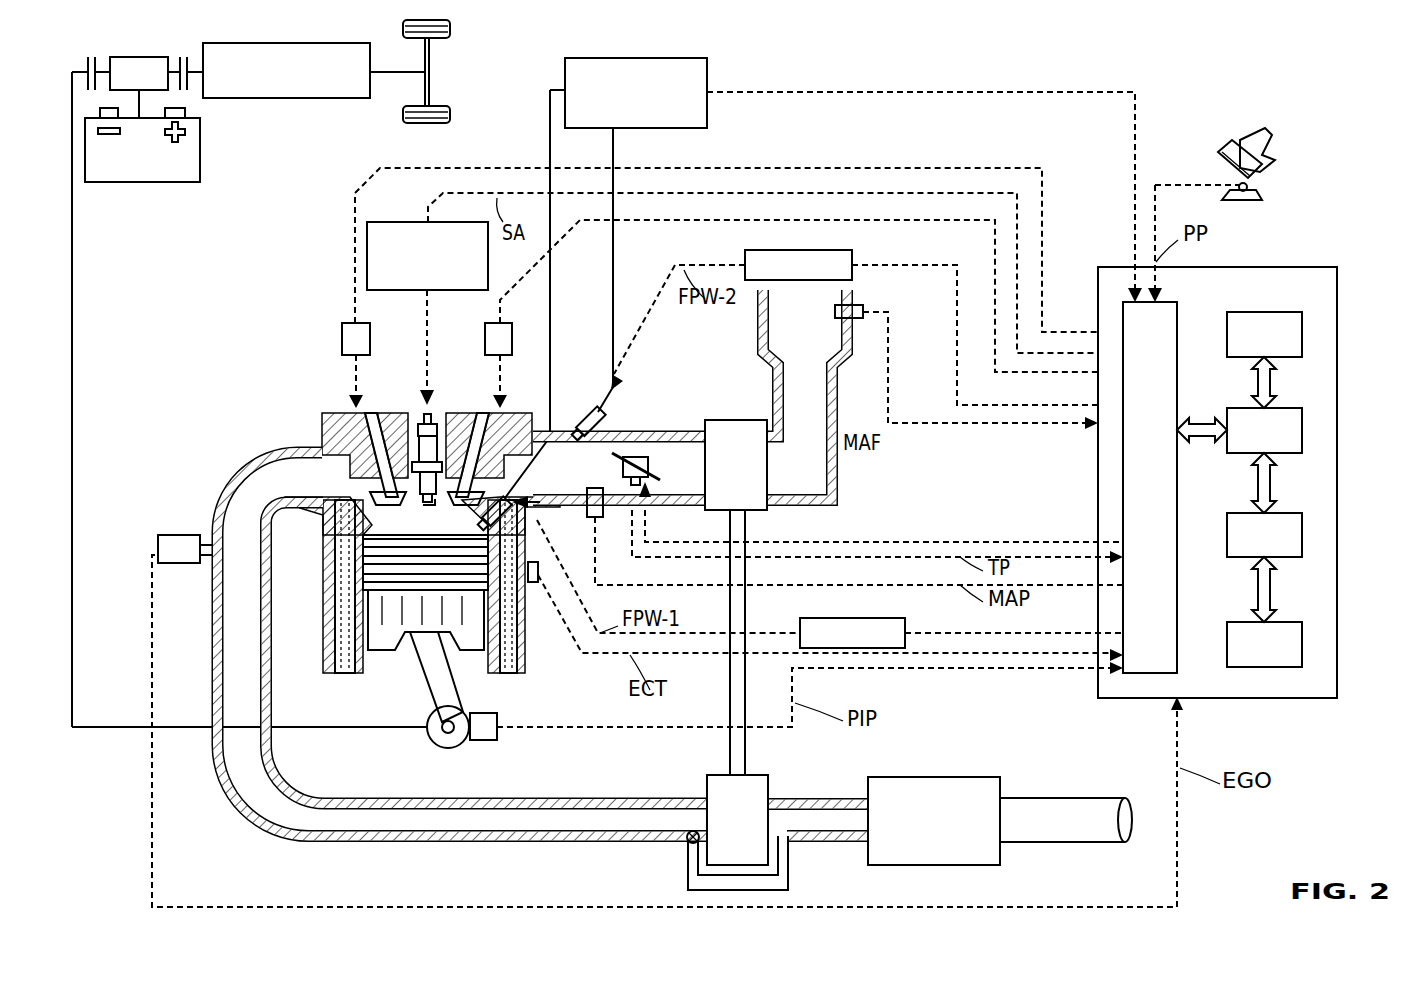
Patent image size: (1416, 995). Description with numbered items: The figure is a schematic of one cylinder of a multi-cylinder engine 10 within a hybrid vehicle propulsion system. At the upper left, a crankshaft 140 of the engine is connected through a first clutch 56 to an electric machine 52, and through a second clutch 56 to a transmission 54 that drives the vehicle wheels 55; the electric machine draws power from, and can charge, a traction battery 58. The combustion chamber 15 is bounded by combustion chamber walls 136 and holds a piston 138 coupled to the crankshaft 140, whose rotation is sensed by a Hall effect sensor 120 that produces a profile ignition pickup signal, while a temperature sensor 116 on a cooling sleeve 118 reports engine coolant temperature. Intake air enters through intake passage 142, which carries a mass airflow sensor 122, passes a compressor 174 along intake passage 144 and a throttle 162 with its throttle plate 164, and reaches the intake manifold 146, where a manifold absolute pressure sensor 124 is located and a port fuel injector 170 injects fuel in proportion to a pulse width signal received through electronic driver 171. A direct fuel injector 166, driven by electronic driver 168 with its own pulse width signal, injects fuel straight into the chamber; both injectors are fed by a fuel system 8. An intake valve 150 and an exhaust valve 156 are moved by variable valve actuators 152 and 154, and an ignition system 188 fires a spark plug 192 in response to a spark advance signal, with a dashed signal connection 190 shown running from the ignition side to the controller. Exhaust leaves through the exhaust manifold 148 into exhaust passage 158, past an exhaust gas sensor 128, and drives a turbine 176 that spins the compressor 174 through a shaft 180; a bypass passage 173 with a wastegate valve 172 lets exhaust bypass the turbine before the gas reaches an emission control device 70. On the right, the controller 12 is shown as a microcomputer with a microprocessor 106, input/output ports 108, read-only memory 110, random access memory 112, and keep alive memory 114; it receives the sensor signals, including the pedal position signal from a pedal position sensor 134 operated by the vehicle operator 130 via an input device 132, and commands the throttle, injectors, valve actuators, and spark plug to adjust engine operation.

The fuel system 8 is at (676, 58).
The engine 10 is at (368, 535).
The controller 12 is at (1257, 469).
The combustion chamber 15 is at (334, 548).
The electric machine 52 is at (135, 57).
The transmission 54 is at (355, 98).
The vehicle wheels 55 is at (430, 123).
The clutches 56 is at (89, 57).
The traction battery 58 is at (138, 182).
The emission control device 70 is at (960, 777).
The microprocessor 106 is at (1302, 425).
The input/output ports 108 is at (1180, 315).
The read-only memory 110 is at (1302, 330).
The random access memory 112 is at (1302, 535).
The keep alive memory 114 is at (1302, 645).
The temperature sensor 116 is at (537, 585).
The cooling sleeve 118 is at (522, 655).
The Hall effect sensor 120 is at (490, 741).
The mass airflow sensor 122 is at (853, 305).
The manifold absolute pressure sensor 124 is at (598, 520).
The exhaust gas sensor 128 is at (158, 540).
The vehicle operator 130 is at (1285, 145).
The input device 132 is at (1225, 160).
The pedal position sensor 134 is at (1262, 187).
The combustion chamber walls 136 is at (355, 680).
The piston 138 is at (418, 628).
The crankshaft 140 is at (433, 746).
The intake passage 142 is at (805, 395).
The intake passage 144 is at (683, 468).
The intake manifold 146 is at (619, 469).
The exhaust manifold 148 is at (463, 645).
The intake valve 150 is at (441, 490).
The variable valve actuator 152 is at (485, 336).
The variable valve actuator 154 is at (342, 336).
The exhaust valve 156 is at (380, 478).
The exhaust passage 158 is at (545, 843).
The throttle 162 is at (640, 455).
The throttle plate 164 is at (624, 458).
The fuel injector 166 is at (491, 499).
The electronic driver 168 is at (800, 618).
The fuel injector 170 is at (590, 420).
The electronic driver 171 is at (748, 252).
The wastegate valve 172 is at (688, 841).
The bypass passage 173 is at (688, 870).
The compressor 174 is at (736, 465).
The turbine 176 is at (737, 820).
The shaft 180 is at (730, 751).
The ignition system 188 is at (388, 222).
The spark advance signal line 190 is at (855, 168).
The spark plug 192 is at (420, 445).